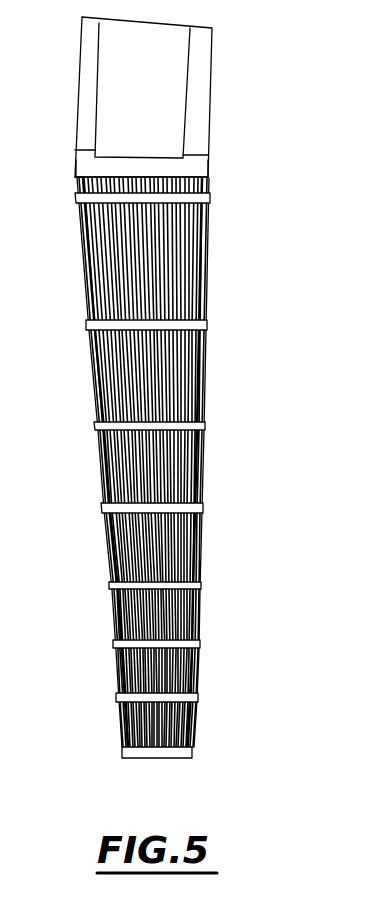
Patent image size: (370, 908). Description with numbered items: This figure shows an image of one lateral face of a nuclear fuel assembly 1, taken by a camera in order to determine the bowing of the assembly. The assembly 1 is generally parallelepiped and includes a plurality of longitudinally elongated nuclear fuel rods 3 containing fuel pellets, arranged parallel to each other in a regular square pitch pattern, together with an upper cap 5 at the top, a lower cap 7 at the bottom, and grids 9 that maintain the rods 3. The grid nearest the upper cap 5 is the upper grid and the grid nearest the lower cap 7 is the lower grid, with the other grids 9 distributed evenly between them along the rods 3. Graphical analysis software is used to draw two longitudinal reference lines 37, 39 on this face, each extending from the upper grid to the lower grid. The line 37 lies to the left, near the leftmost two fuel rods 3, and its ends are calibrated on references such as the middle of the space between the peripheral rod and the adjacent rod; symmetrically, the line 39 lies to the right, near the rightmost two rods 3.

The nuclear fuel assembly 1 is at (252, 111).
The nuclear fuel rods 3 is at (180, 468).
The upper cap 5 is at (177, 170).
The lower cap 7 is at (177, 753).
The grids 9 is at (194, 330).
The longitudinal line 37 is at (85, 292).
The longitudinal line 39 is at (197, 282).